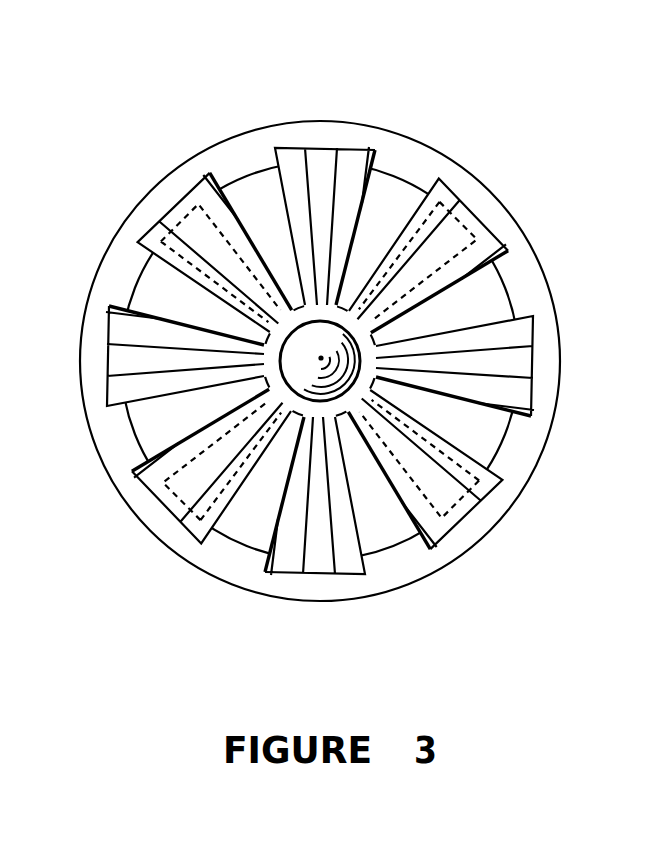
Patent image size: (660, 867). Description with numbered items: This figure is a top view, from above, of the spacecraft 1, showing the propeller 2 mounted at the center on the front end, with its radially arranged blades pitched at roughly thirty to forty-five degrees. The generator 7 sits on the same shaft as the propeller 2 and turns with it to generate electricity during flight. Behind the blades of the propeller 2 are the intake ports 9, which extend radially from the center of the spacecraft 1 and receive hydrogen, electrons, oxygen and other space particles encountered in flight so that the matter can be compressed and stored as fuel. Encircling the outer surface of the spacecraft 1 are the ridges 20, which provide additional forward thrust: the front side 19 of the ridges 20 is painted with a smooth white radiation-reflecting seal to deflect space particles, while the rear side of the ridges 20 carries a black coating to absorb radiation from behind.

The spacecraft 1 is at (200, 141).
The propeller 2 is at (142, 392).
The generator 7 is at (394, 222).
The intake ports 9 is at (505, 249).
The front side 19 is at (152, 515).
The ridges 20 is at (250, 594).